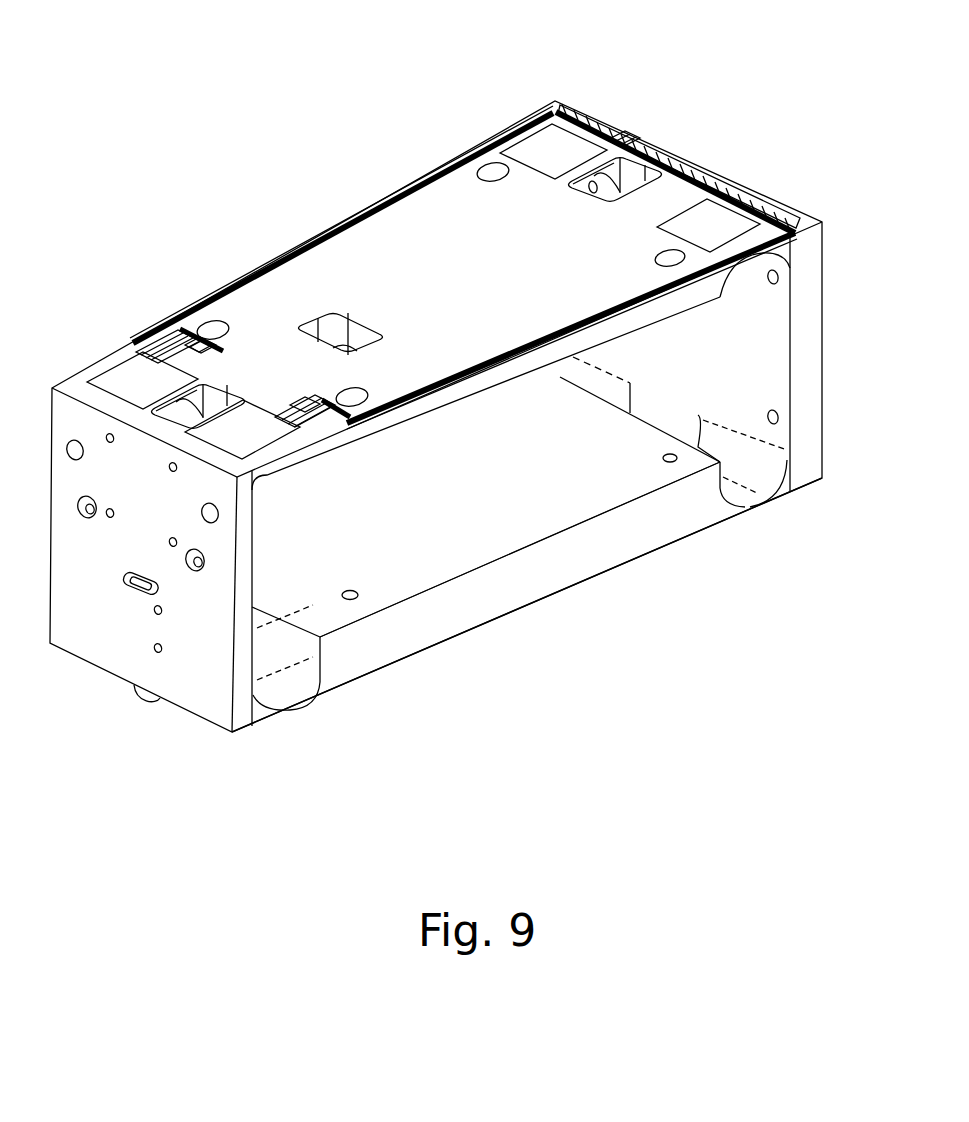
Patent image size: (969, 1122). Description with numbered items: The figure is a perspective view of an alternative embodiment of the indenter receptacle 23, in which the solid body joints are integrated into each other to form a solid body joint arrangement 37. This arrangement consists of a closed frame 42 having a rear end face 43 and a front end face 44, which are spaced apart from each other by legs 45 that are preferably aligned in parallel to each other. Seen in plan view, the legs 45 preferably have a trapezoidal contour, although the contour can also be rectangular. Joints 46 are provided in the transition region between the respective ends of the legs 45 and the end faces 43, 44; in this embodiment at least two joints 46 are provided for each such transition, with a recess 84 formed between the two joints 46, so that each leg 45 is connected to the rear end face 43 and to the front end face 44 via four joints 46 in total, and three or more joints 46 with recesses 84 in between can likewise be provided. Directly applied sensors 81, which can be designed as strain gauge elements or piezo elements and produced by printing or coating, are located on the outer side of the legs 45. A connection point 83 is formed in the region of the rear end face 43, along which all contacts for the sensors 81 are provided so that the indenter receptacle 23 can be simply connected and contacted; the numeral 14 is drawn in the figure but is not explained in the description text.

The mounting boss 14 is at (151, 711).
The indenter receptacle 23 is at (562, 646).
The solid body joint arrangement 37 is at (473, 676).
The closed frame 42 is at (633, 599).
The rear end face 43 is at (806, 256).
The front end face 44 is at (243, 665).
The legs 45 is at (488, 385).
The joints 46 is at (604, 182).
The sensors 81 is at (130, 380).
The connection point 83 is at (605, 100).
The recess 84 is at (240, 378).